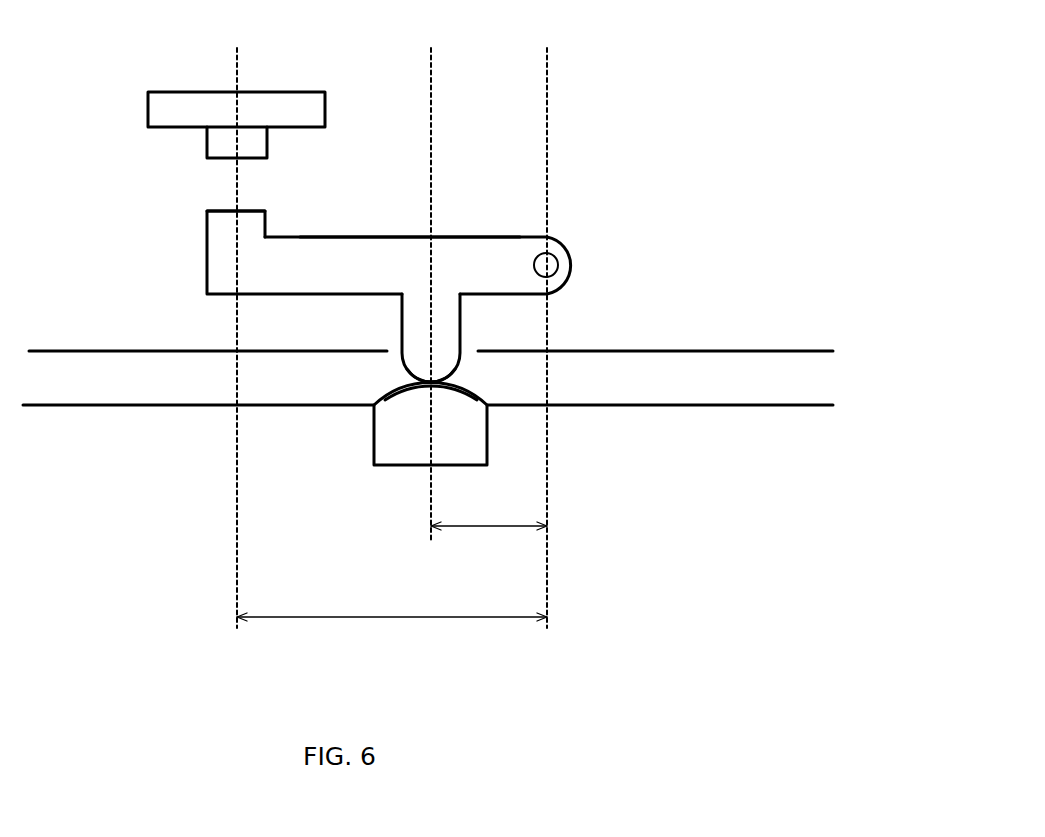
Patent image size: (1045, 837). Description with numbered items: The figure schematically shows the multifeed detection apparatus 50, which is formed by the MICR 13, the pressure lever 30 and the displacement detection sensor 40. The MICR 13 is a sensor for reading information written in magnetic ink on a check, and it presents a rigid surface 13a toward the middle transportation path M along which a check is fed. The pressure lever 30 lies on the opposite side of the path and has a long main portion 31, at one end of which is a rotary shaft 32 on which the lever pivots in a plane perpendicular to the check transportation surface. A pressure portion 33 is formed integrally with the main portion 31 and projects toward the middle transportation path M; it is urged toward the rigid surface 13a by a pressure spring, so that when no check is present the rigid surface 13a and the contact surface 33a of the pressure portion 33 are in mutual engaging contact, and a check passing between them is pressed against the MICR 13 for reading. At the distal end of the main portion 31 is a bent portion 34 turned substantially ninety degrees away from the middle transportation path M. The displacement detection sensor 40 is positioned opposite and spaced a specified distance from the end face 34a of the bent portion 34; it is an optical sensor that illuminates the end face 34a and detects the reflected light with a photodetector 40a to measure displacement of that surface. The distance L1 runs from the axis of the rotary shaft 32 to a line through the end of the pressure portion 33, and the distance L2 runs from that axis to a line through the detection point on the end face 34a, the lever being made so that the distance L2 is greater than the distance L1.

The multifeed detection apparatus 50 is at (583, 133).
The displacement detection sensor 40 is at (310, 92).
The photodetector 40a is at (217, 160).
The bent portion 34 is at (207, 240).
The end face 34a is at (217, 210).
The pressure lever 30 is at (485, 236).
The main portion 31 is at (400, 236).
The rotary shaft 32 is at (558, 272).
The pressure portion 33 is at (402, 323).
The contact surface 33a is at (427, 383).
The MICR 13 is at (487, 448).
The rigid surface 13a is at (463, 390).
The middle transportation path M is at (733, 350).
The distance L1 is at (489, 513).
The distance L2 is at (392, 605).